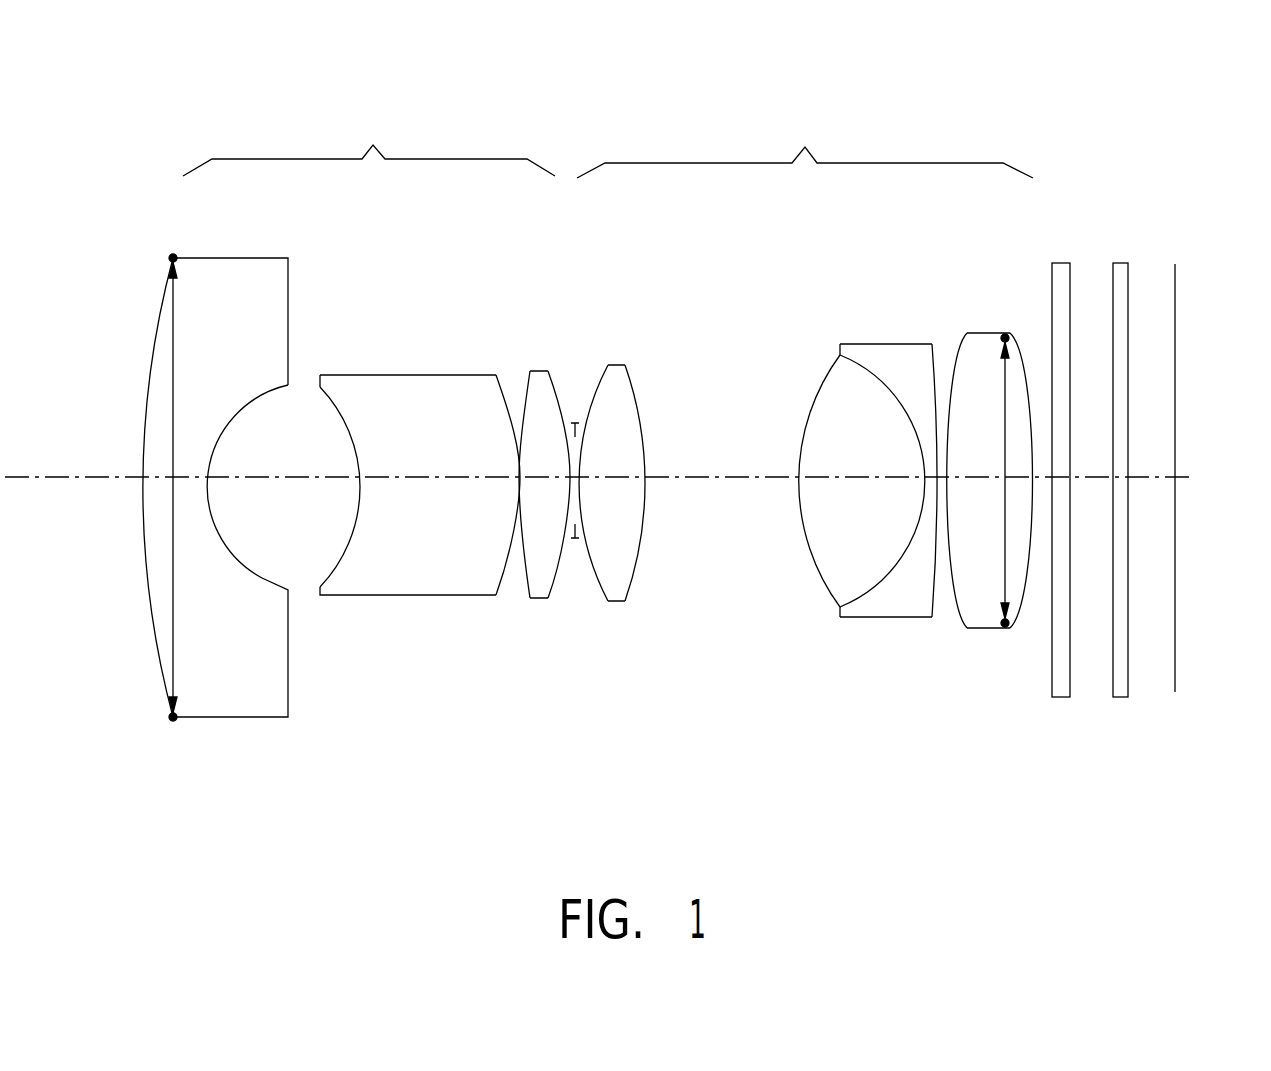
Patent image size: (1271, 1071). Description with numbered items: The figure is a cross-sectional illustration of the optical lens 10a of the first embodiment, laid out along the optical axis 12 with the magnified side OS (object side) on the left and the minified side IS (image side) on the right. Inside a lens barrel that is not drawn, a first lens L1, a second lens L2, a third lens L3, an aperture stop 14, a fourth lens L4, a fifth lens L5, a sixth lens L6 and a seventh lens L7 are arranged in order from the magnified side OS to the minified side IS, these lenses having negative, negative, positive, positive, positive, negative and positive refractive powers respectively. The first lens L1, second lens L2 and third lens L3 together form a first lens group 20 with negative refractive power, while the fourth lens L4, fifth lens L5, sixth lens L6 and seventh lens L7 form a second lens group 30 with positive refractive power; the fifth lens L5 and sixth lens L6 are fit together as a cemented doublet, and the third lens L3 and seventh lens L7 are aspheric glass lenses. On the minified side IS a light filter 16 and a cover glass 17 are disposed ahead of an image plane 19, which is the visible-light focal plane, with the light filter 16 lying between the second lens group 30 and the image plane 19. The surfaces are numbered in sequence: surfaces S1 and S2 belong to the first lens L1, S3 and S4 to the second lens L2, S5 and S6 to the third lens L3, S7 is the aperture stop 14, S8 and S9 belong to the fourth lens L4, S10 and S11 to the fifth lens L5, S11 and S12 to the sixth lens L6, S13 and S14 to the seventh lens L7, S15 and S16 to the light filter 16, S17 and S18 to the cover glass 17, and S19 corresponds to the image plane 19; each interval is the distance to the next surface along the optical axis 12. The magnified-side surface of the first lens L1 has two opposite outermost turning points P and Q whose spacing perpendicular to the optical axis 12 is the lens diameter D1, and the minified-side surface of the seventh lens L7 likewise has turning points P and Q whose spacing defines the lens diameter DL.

The optical lens 10a is at (58, 59).
The optical axis 12 is at (77, 477).
The aperture stop 14 is at (575, 423).
The light filter 16 is at (1062, 265).
The cover glass 17 is at (1122, 265).
The image plane 19 is at (1175, 321).
The first lens group 20 is at (568, 429).
The second lens group 30 is at (805, 409).
The magnified side OS is at (104, 146).
The minified side IS is at (1211, 146).
The first lens L1 is at (232, 258).
The second lens L2 is at (415, 376).
The third lens L3 is at (541, 371).
The fourth lens L4 is at (617, 365).
The fifth lens L5 is at (823, 387).
The sixth lens L6 is at (889, 353).
The seventh lens L7 is at (985, 333).
The surface S1 is at (155, 637).
The surface S2 is at (288, 590).
The surface S3 is at (320, 590).
The surface S4 is at (496, 595).
The surface S5 is at (530, 598).
The surface S6 is at (548, 598).
The surface S7 is at (575, 538).
The surface S8 is at (608, 601).
The surface S9 is at (625, 601).
The surface S10 is at (805, 580).
The surface S11 is at (870, 617).
The surface S12 is at (934, 617).
The surface S13 is at (962, 600).
The surface S14 is at (1017, 612).
The surface S15 is at (1052, 650).
The surface S16 is at (1070, 637).
The surface S17 is at (1113, 665).
The surface S18 is at (1128, 665).
The surface S19 is at (1175, 635).
The turning point P is at (579, 289).
The turning point Q is at (589, 691).
The lens diameter D1 is at (191, 487).
The lens diameter DL is at (988, 480).